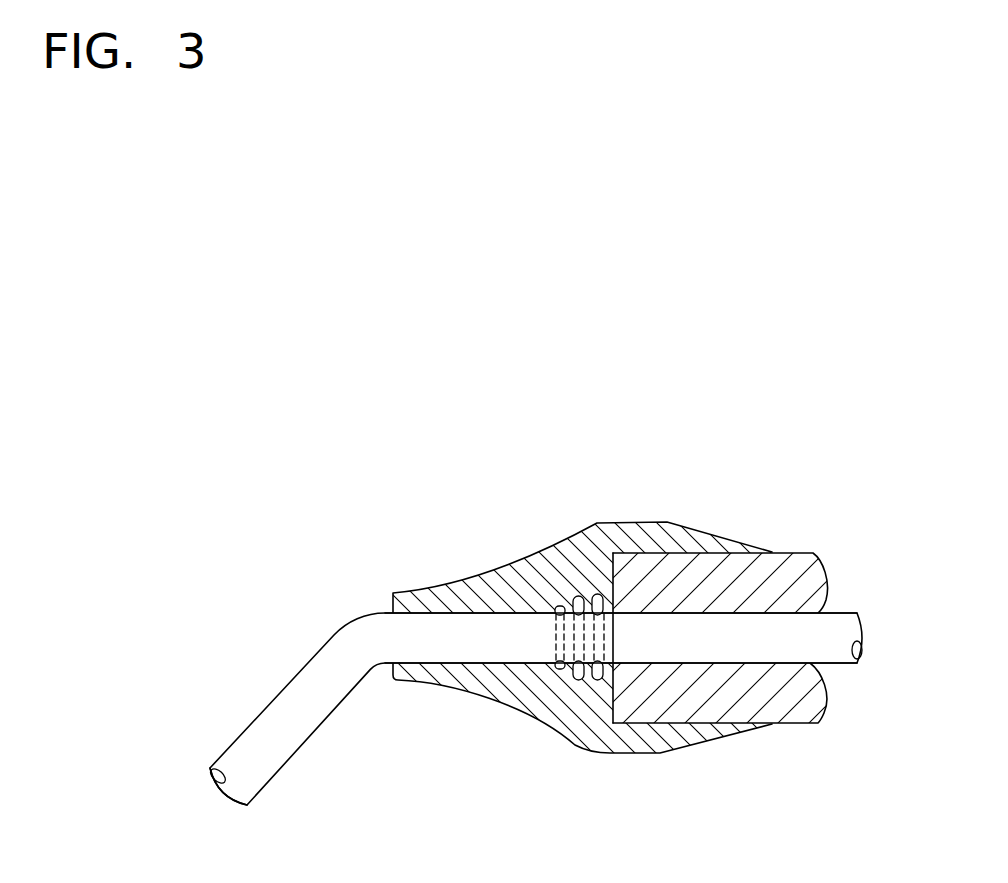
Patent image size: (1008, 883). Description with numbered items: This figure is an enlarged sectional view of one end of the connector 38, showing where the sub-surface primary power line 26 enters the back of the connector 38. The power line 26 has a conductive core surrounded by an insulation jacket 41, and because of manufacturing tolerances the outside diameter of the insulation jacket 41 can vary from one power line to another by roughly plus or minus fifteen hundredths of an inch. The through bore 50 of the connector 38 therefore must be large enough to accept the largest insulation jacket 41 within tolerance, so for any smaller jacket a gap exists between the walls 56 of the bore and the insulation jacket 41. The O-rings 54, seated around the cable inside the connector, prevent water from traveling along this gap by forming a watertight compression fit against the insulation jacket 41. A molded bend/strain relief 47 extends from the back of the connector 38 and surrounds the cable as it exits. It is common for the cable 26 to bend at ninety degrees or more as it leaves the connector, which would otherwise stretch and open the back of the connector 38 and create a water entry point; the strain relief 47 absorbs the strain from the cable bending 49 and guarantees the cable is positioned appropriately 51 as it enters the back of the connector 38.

The sub-surface primary power line 26 is at (272, 712).
The insulation jacket 41 is at (276, 791).
The molded bend/strain relief 47 is at (550, 529).
The cable bending 49 is at (415, 683).
The through bore 50 is at (671, 602).
The appropriate positioning of the cable 51 is at (543, 682).
The O-rings 54 is at (566, 586).
The walls 56 is at (598, 647).
The connector 38 is at (779, 713).